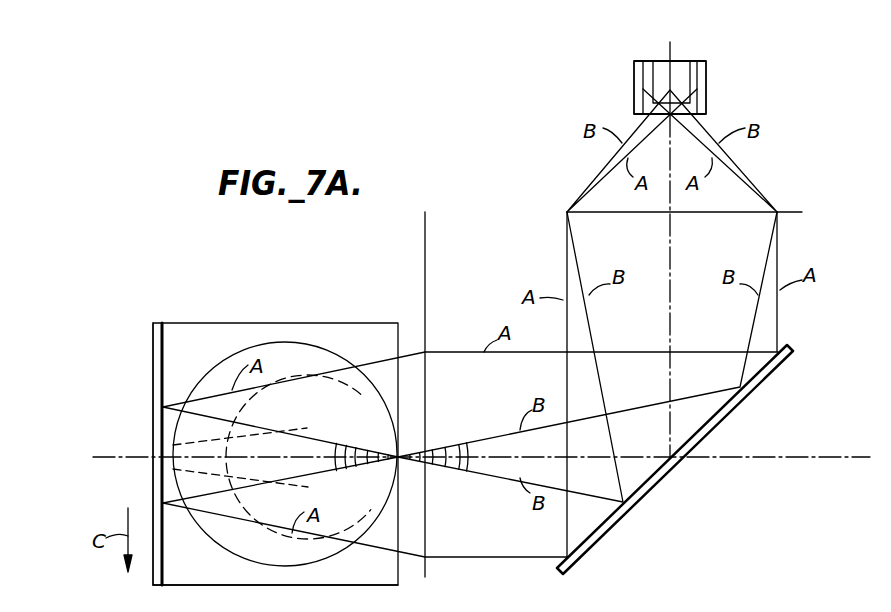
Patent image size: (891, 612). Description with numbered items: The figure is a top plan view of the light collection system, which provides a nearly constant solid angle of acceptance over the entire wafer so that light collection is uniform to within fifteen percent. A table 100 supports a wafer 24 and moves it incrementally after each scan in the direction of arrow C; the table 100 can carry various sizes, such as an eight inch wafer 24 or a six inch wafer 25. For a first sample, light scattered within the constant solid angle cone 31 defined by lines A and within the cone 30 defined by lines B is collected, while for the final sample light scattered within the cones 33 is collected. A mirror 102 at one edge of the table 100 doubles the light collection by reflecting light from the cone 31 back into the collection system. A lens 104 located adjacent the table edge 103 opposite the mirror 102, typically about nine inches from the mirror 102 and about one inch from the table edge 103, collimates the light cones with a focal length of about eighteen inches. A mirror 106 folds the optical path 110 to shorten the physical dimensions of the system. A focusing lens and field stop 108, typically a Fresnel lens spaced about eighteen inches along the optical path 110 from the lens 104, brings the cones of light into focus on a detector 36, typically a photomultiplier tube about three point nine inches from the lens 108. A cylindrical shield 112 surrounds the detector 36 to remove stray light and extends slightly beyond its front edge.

The wafer 24 is at (225, 548).
The six inch wafer 25 is at (270, 527).
The cone 30 is at (485, 438).
The constant solid angle cone 31 is at (332, 440).
The cones 33 is at (219, 437).
The detector 36 is at (692, 73).
The table 100 is at (192, 333).
The mirror 102 is at (153, 353).
The table edge 103 is at (395, 568).
The lens 104 is at (428, 286).
The mirror 106 is at (765, 380).
The focusing lens and field stop 108 is at (698, 214).
The optical path 110 is at (115, 460).
The cylindrical shield 112 is at (703, 96).